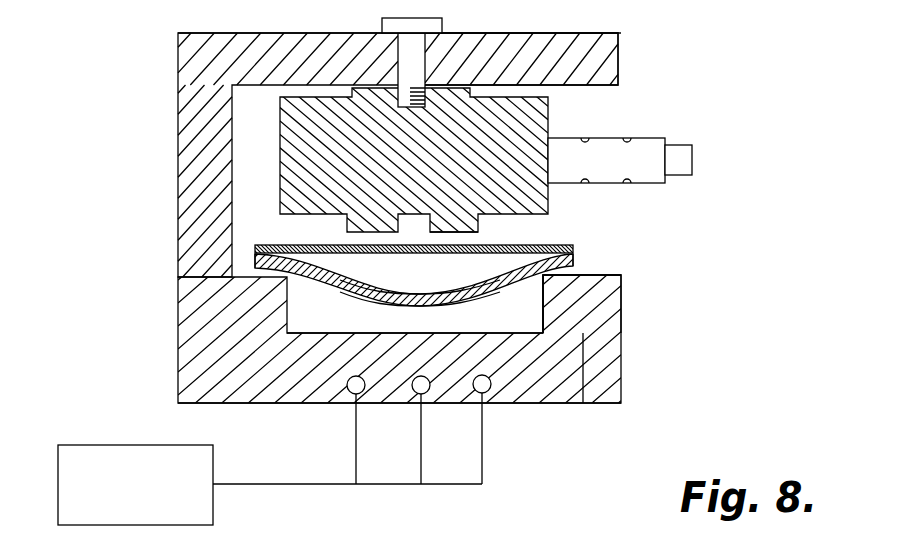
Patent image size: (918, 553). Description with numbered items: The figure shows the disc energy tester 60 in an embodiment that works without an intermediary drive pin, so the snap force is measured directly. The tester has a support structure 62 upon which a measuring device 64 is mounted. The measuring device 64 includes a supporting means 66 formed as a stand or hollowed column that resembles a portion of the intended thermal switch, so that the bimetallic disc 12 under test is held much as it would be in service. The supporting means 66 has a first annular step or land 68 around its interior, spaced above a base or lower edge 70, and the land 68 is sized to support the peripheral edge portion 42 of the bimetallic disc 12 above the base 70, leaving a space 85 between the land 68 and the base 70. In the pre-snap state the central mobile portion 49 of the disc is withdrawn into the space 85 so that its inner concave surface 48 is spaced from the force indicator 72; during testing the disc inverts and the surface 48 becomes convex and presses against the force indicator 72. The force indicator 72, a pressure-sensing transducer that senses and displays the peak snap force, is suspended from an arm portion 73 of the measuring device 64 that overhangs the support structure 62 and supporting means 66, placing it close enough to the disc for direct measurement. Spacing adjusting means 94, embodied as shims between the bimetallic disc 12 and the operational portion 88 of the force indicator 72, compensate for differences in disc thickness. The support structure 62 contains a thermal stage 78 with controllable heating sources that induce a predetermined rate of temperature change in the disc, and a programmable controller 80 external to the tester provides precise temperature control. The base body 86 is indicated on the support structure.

The disc energy tester 60 is at (757, 122).
The measuring device 64 is at (178, 95).
The arm portion 73 is at (618, 60).
The force indicator 72 is at (418, 170).
The spacing adjusting means 94 is at (258, 247).
The bimetallic disc 12 is at (333, 290).
The peripheral edge portion 42 is at (257, 266).
The inner concave surface 48 is at (418, 292).
The central mobile portion 49 is at (410, 305).
The operational portion 88 is at (455, 236).
The annular land 68 is at (549, 273).
The supporting means 66 is at (621, 312).
The space 85 is at (524, 320).
The base 70 is at (543, 335).
The support structure 62 is at (622, 393).
The base body 86 is at (570, 378).
The thermal stage 78 is at (475, 393).
The programmable controller 80 is at (142, 511).